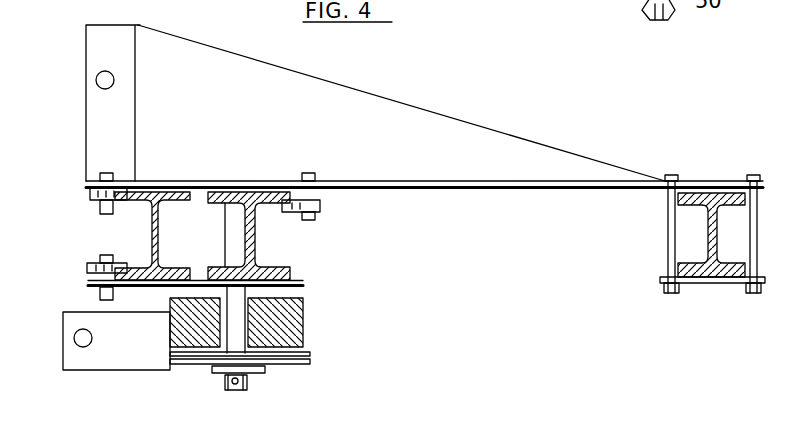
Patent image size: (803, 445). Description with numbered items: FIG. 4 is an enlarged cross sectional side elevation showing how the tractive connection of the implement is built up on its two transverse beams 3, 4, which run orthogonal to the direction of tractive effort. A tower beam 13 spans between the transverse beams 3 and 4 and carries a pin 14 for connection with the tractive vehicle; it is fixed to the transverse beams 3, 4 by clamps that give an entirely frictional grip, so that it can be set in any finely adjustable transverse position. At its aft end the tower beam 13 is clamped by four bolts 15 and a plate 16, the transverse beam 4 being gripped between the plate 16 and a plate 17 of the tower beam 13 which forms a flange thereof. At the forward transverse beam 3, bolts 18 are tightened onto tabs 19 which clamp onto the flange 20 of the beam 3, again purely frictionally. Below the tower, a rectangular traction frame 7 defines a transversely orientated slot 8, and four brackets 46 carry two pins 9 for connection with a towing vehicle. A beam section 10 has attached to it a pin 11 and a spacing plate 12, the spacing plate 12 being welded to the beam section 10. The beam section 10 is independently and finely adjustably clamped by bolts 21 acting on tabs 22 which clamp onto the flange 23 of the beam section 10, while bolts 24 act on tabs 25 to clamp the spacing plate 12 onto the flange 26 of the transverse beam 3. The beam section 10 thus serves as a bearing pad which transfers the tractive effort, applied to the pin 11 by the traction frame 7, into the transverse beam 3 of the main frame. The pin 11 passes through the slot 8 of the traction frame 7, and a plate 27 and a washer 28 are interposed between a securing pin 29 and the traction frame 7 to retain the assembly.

The transverse beam 3 is at (160, 232).
The transverse beam 4 is at (714, 233).
The traction frame 7 is at (298, 313).
The slot 8 is at (258, 333).
The pins 9 is at (86, 347).
The beam section 10 is at (258, 242).
The pin 11 is at (238, 292).
The spacing plate 12 is at (130, 285).
The tower beam 13 is at (330, 87).
The pin 14 is at (96, 80).
The bolts 15 is at (668, 225).
The plate 16 is at (712, 283).
The plate 17 is at (456, 181).
The bolts 18 is at (100, 177).
The tabs 19 is at (92, 205).
The flange 20 is at (165, 192).
The bolts 21 is at (318, 178).
The tabs 22 is at (288, 212).
The flange 23 is at (270, 192).
The bolts 24 is at (97, 262).
The tabs 25 is at (118, 264).
The flange 26 is at (183, 273).
The plate 27 is at (310, 362).
The washer 28 is at (254, 372).
The securing pin 29 is at (236, 390).
The brackets 46 is at (152, 356).